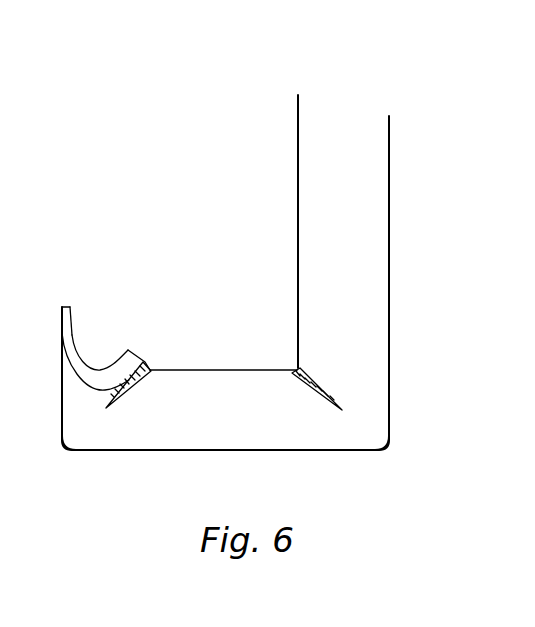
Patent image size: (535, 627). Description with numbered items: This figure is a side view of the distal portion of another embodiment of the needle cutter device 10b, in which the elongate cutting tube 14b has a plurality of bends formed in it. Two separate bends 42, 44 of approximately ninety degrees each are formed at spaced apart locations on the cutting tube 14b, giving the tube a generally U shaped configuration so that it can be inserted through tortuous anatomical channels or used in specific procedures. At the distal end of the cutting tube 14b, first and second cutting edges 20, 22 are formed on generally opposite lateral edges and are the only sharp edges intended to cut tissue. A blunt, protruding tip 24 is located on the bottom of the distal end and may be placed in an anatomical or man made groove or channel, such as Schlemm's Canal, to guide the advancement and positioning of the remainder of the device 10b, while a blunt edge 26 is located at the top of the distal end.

The needle cutter device 10b is at (288, 131).
The inner wall 14b is at (312, 207).
The first cutting edge 20 is at (115, 378).
The second cutting edge 22 is at (100, 364).
The blunt protruding tip 24 is at (65, 302).
The blunt edge 26 is at (135, 350).
The bottom left corner 42 is at (64, 446).
The bottom right corner 44 is at (387, 448).